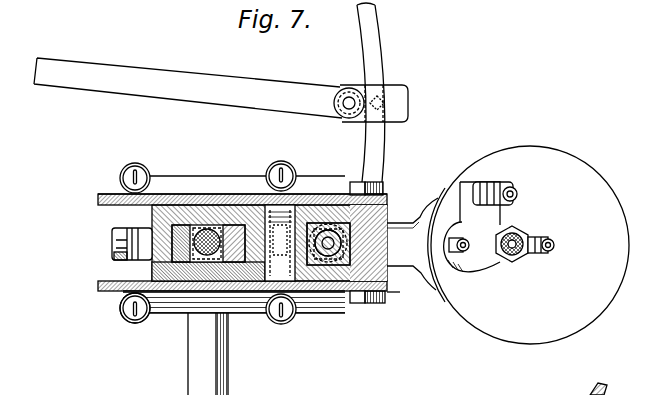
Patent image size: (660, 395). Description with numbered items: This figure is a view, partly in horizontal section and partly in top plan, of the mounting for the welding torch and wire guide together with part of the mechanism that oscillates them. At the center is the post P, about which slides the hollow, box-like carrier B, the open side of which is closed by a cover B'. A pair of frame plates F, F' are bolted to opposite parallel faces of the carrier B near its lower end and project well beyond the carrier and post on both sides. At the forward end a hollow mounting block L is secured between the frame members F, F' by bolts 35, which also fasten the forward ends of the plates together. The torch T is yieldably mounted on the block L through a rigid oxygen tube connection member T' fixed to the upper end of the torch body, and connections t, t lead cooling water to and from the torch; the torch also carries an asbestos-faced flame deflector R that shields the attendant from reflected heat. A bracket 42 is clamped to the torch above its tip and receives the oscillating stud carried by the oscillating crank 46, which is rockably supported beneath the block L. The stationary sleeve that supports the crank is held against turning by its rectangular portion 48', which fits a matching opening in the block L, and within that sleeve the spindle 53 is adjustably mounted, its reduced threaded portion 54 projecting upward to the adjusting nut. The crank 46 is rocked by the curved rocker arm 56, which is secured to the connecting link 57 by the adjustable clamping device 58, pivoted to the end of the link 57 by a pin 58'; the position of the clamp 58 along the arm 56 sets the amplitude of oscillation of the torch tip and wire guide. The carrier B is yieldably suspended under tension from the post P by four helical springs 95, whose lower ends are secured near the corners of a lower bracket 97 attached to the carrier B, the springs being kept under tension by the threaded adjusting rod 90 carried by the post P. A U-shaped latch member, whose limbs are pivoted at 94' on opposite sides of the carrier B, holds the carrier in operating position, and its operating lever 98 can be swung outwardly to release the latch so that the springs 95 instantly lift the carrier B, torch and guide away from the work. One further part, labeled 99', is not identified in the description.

The connecting link 57 is at (262, 78).
The pin 58' is at (344, 88).
The adjustable clamping device 58 is at (388, 94).
The curved rocker arm 56 is at (386, 46).
The frame plate F is at (227, 201).
The frame plate F' is at (226, 290).
The slidable box-like carrier B is at (242, 243).
The cover B' is at (180, 271).
The threaded adjusting rod 90 is at (204, 258).
The post P is at (240, 230).
The rectangular portion of sleeve 48' is at (327, 284).
The spindle 53 is at (330, 298).
The pivot of latch member 94' is at (116, 244).
The bolts 35 is at (287, 168).
The helical springs 95 is at (142, 320).
The lower bracket 97 is at (218, 193).
The operating lever 98 is at (226, 384).
The bracket 42 is at (400, 226).
The oscillating crank 46 is at (411, 256).
The hollow mounting block L is at (390, 280).
The flame deflector R is at (536, 150).
The torch T is at (487, 227).
The rigid oxygen tube connection member T' is at (513, 254).
The cooling connections t is at (546, 240).
The reduced threaded portion of spindle 54 is at (604, 389).
The part 99' is at (96, 392).